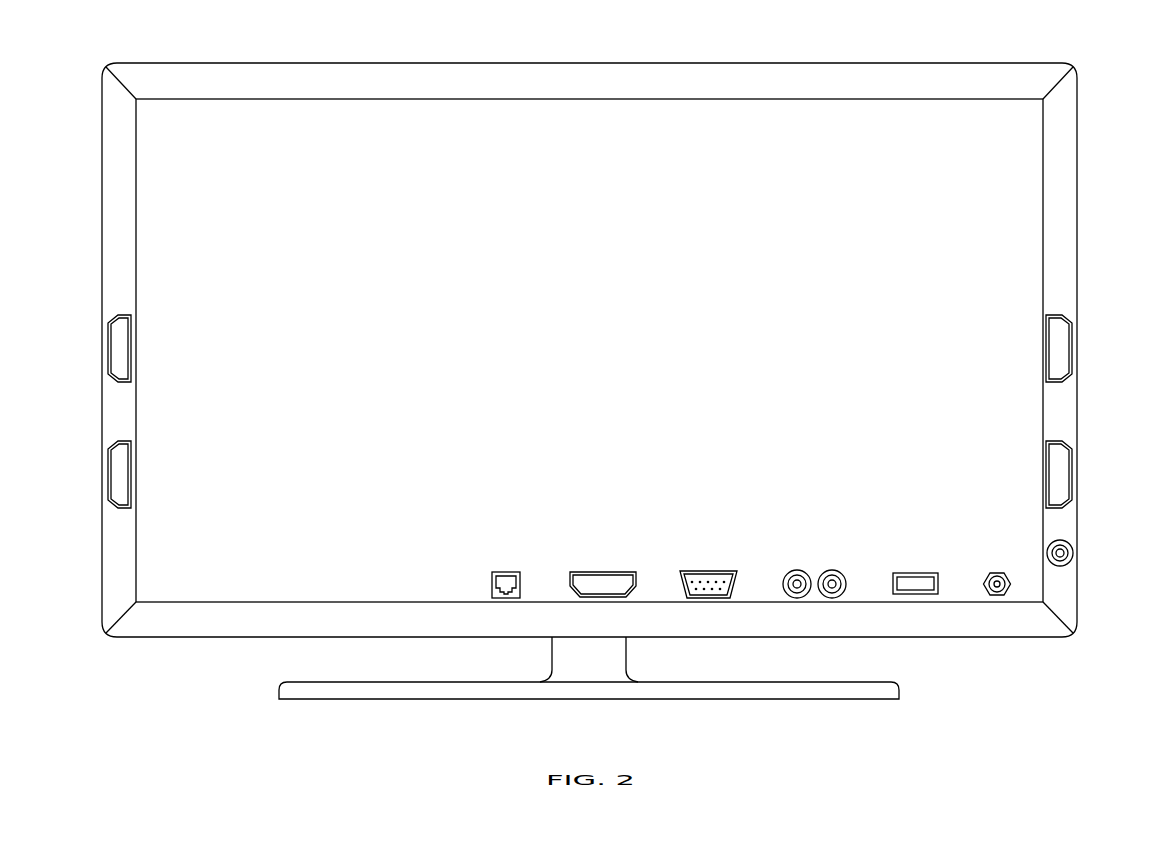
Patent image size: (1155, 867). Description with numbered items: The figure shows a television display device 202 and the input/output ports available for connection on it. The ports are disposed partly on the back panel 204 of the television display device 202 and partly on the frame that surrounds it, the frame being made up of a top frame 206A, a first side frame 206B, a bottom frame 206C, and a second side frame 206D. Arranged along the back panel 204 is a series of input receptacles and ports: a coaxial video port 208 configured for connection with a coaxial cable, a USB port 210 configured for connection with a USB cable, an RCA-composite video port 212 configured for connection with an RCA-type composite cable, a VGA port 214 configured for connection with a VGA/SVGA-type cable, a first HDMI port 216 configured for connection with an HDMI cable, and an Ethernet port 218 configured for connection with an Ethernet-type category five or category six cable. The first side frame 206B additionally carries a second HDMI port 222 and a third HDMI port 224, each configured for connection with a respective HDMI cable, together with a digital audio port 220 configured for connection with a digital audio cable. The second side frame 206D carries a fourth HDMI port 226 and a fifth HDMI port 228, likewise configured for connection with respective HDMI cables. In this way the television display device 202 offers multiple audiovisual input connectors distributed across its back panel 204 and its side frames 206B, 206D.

The television display device 202 is at (590, 63).
The back panel 204 is at (155, 186).
The top frame 206A is at (796, 84).
The first side frame 206B is at (1060, 266).
The bottom frame 206C is at (950, 623).
The second side frame 206D is at (117, 267).
The coaxial video port 208 is at (992, 570).
The USB port 210 is at (915, 573).
The RCA-composite video port 212 is at (813, 571).
The VGA port 214 is at (708, 571).
The first HDMI port 216 is at (604, 572).
The Ethernet/RJ-45 port 218 is at (504, 572).
The digital audio port 220 is at (1073, 553).
The second HDMI port 222 is at (1072, 473).
The third HDMI port 224 is at (1072, 347).
The fourth HDMI port 226 is at (108, 345).
The fifth HDMI port 228 is at (108, 473).